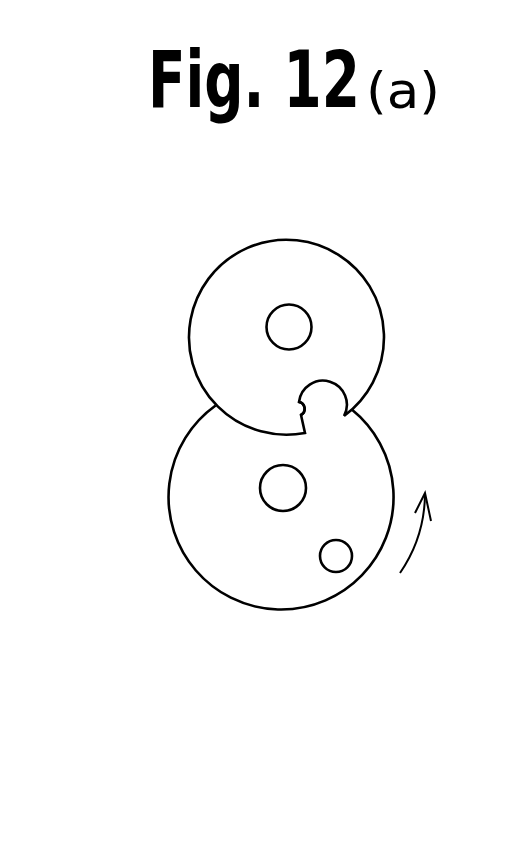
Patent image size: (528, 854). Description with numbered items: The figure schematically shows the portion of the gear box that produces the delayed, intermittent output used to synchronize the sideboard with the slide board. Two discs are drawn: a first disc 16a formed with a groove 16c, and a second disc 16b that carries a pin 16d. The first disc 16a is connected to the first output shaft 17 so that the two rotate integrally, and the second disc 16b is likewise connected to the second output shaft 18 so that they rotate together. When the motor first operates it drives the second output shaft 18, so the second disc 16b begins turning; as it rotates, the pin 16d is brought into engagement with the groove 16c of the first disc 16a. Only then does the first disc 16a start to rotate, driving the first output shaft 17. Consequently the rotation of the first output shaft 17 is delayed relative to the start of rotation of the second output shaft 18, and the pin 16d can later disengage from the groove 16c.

The first disc 16a is at (360, 347).
The second disc 16b is at (298, 595).
The groove 16c is at (297, 395).
The pin 16d is at (337, 557).
The first output shaft 17 is at (278, 320).
The second output shaft 18 is at (278, 488).